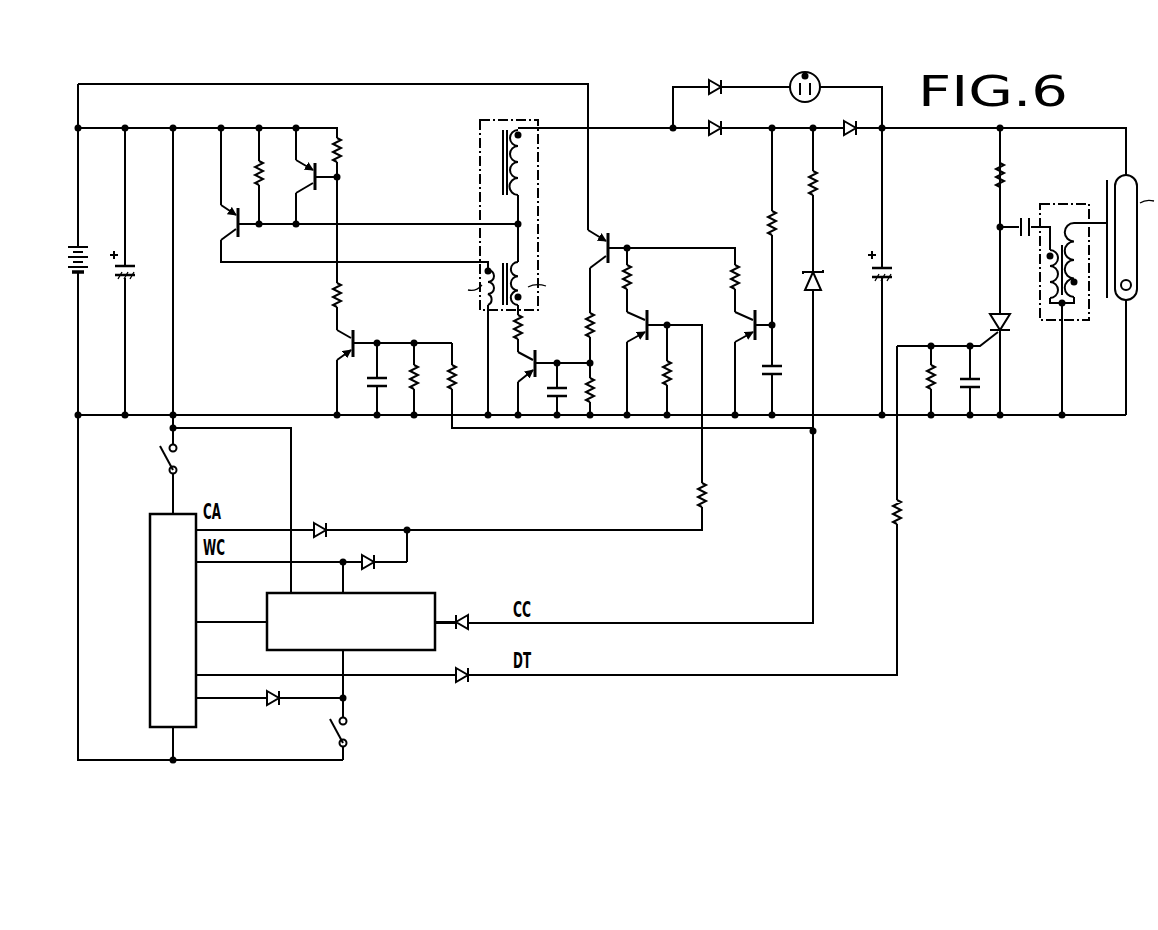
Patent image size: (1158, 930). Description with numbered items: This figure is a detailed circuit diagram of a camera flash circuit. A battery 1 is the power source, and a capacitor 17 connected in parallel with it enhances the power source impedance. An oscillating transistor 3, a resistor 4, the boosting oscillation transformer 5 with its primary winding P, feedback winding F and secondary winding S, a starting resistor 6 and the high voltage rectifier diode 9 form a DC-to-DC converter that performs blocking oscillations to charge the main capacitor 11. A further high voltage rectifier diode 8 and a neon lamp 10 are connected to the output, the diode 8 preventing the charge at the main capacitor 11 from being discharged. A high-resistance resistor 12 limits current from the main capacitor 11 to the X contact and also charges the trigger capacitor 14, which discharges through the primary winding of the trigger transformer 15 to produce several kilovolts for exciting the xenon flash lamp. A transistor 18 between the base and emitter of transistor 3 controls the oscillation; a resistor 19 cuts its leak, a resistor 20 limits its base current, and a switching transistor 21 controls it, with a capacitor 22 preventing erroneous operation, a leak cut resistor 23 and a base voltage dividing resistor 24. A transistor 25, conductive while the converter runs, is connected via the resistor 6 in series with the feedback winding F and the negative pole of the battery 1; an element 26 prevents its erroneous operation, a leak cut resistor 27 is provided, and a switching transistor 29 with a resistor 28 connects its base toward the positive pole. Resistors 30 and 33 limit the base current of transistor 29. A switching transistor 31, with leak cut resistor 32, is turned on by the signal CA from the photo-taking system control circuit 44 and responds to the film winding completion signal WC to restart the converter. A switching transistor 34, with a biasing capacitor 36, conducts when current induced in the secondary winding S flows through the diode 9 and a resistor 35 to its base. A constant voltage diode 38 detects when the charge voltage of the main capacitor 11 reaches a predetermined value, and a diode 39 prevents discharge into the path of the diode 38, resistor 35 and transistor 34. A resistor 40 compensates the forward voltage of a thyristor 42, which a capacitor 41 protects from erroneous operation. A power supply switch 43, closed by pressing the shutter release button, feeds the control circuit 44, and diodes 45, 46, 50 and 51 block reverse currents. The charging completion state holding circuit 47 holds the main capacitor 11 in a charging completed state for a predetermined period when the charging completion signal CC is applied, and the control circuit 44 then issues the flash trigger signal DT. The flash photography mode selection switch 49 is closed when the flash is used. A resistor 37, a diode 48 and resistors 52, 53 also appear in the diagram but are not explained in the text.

The battery 1 is at (68, 256).
The oscillating transistor 3 is at (227, 224).
The resistor 4 is at (255, 180).
The boosting oscillation transformer 5 is at (492, 117).
The resistor 6 is at (526, 327).
The high voltage rectifier diode 8 is at (715, 80).
The high voltage rectifier diode 9 is at (717, 136).
The neon lamp 10 is at (811, 78).
The main capacitor 11 is at (870, 278).
The resistor 12 is at (995, 180).
The trigger capacitor 14 is at (1014, 217).
The trigger transformer 15 is at (1064, 204).
The capacitor 17 is at (146, 267).
The transistor 18 is at (313, 177).
The resistor 19 is at (341, 160).
The resistor 20 is at (333, 299).
The switching transistor 21 is at (333, 346).
The capacitor 22 is at (370, 388).
The leak cut resistor 23 is at (408, 385).
The resistor 24 is at (445, 385).
The transistor 25 is at (522, 365).
The transistor 26 is at (553, 394).
The leak cut resistor 27 is at (596, 390).
The resistor 28 is at (584, 325).
The switching transistor 29 is at (600, 248).
The resistor 30 is at (634, 278).
The switching transistor 31 is at (643, 325).
The leak cut resistor 32 is at (661, 379).
The resistor 33 is at (730, 278).
The switching transistor 34 is at (743, 327).
The resistor 35 is at (768, 225).
The biasing capacitor 36 is at (795, 370).
The resistor 37 is at (809, 185).
The constant voltage diode 38 is at (807, 284).
The diode 39 is at (850, 139).
The resistor 40 is at (920, 384).
The capacitor 41 is at (958, 384).
The thyristor 42 is at (992, 312).
The power supply switch 43 is at (164, 458).
The photo-taking system control circuit 44 is at (150, 570).
The diode 45 is at (324, 517).
The diode 46 is at (372, 575).
The charging completion state holding circuit 47 is at (264, 646).
The diode 48 is at (272, 711).
The flash photography mode selection switch 49 is at (348, 731).
The diode 50 is at (462, 615).
The diode 51 is at (462, 691).
The resistor 52 is at (692, 494).
The resistor 53 is at (886, 510).